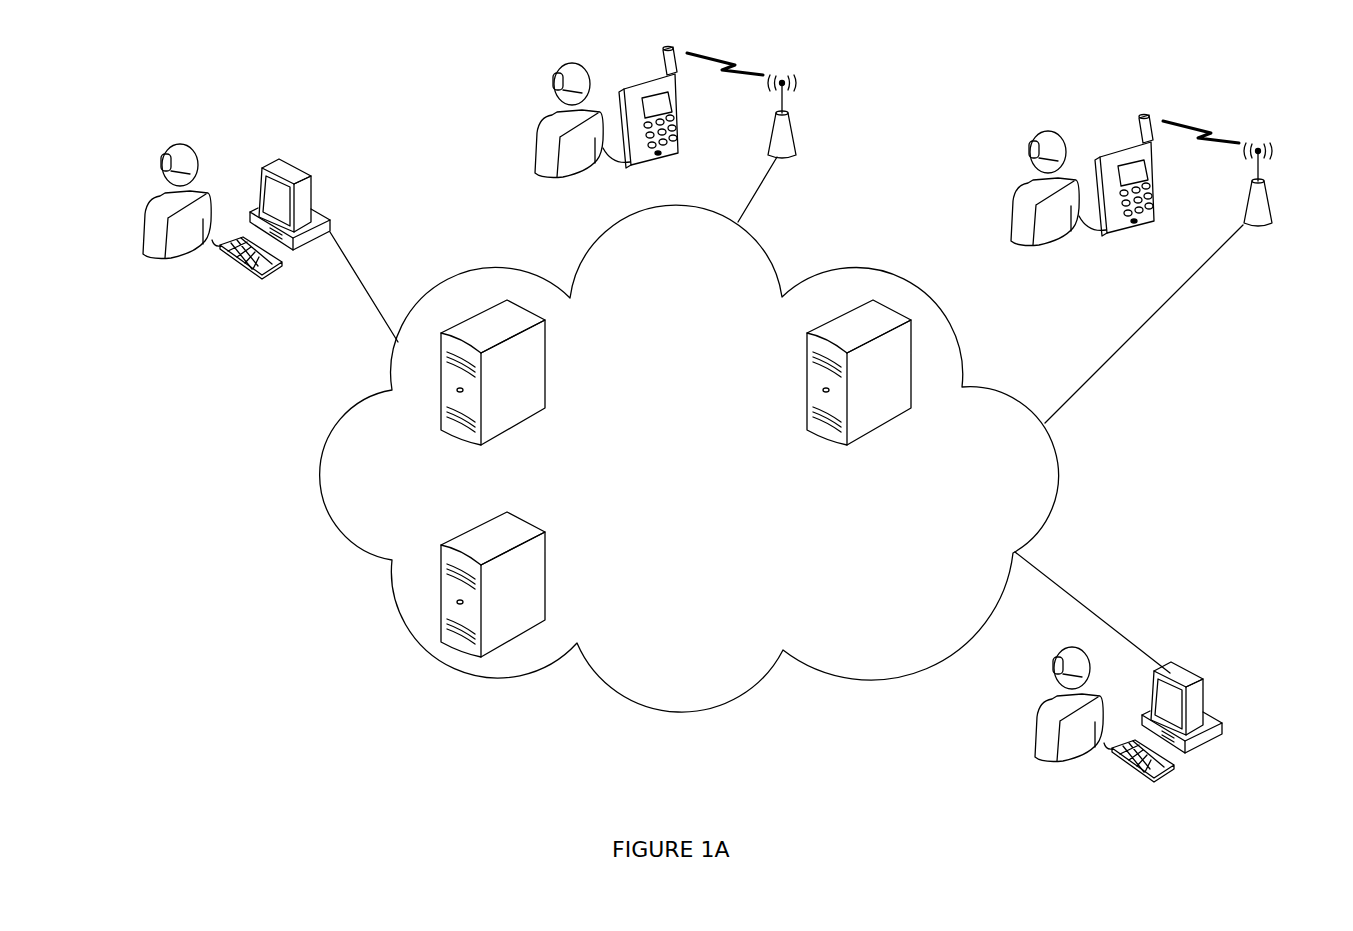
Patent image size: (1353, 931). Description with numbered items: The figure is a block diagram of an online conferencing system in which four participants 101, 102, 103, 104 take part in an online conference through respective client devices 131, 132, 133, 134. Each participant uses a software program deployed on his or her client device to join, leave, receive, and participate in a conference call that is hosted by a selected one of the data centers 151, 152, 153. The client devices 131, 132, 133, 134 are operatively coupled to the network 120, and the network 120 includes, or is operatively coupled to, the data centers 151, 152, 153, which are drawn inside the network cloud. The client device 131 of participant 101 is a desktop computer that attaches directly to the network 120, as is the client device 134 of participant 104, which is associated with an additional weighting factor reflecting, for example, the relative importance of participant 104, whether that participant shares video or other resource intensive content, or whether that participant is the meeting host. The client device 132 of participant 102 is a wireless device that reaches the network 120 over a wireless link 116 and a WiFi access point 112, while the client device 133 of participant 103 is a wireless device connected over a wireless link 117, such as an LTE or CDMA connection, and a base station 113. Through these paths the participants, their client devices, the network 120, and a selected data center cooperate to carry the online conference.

The participant 101 is at (165, 192).
The participant 102 is at (556, 110).
The participant 103 is at (1031, 178).
The participant 104 is at (1057, 696).
The client device 131 is at (297, 170).
The client device 132 is at (657, 72).
The client device 133 is at (1133, 141).
The client device 134 is at (1190, 673).
The WiFi access point 112 is at (789, 158).
The base station 113 is at (1250, 230).
The wireless link 116 is at (743, 70).
The wireless link 117 is at (1190, 124).
The network 120 is at (764, 486).
The data center 151 is at (548, 360).
The data center 152 is at (888, 425).
The data center 153 is at (548, 578).